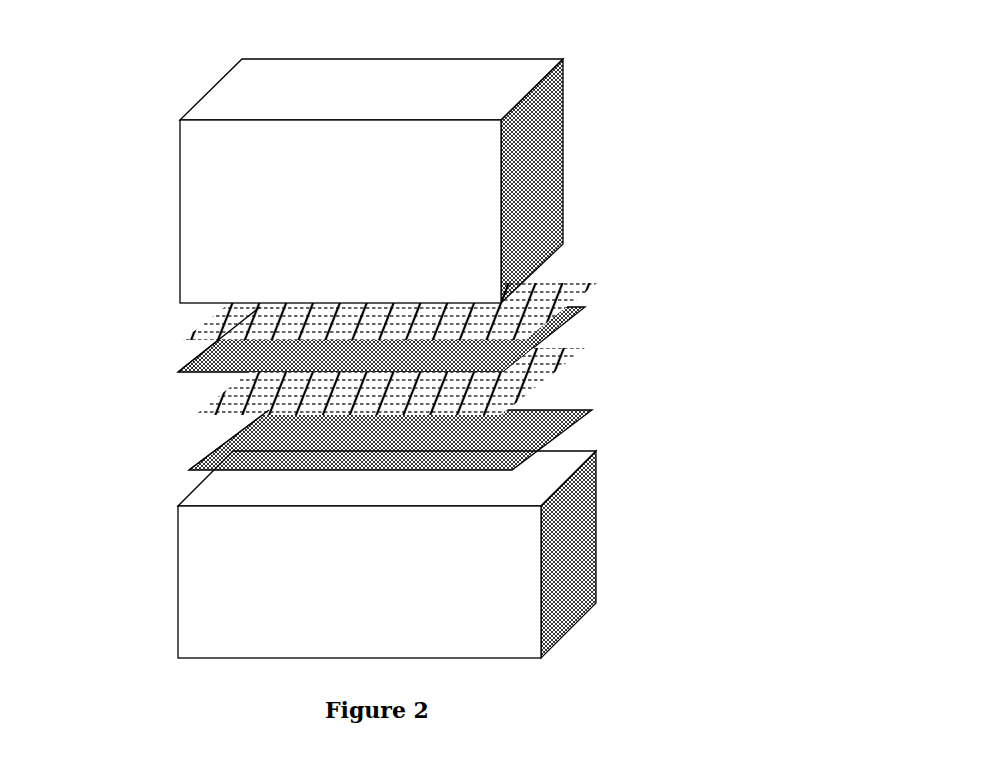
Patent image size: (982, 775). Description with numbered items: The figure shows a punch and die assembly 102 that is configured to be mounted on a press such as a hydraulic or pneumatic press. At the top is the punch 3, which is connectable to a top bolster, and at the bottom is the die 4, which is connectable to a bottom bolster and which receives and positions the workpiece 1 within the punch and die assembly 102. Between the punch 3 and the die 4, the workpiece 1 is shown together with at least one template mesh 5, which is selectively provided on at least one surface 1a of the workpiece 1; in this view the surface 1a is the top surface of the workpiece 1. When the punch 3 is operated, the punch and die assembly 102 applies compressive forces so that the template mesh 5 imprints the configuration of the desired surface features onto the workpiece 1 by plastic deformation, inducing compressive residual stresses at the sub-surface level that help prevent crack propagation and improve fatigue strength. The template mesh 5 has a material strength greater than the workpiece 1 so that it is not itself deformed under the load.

The punch and die assembly 102 is at (435, 341).
The punch 3 is at (530, 135).
The die 4 is at (583, 500).
The workpiece 1 is at (545, 317).
The surface 1a is at (263, 445).
The template mesh 5 is at (540, 287).